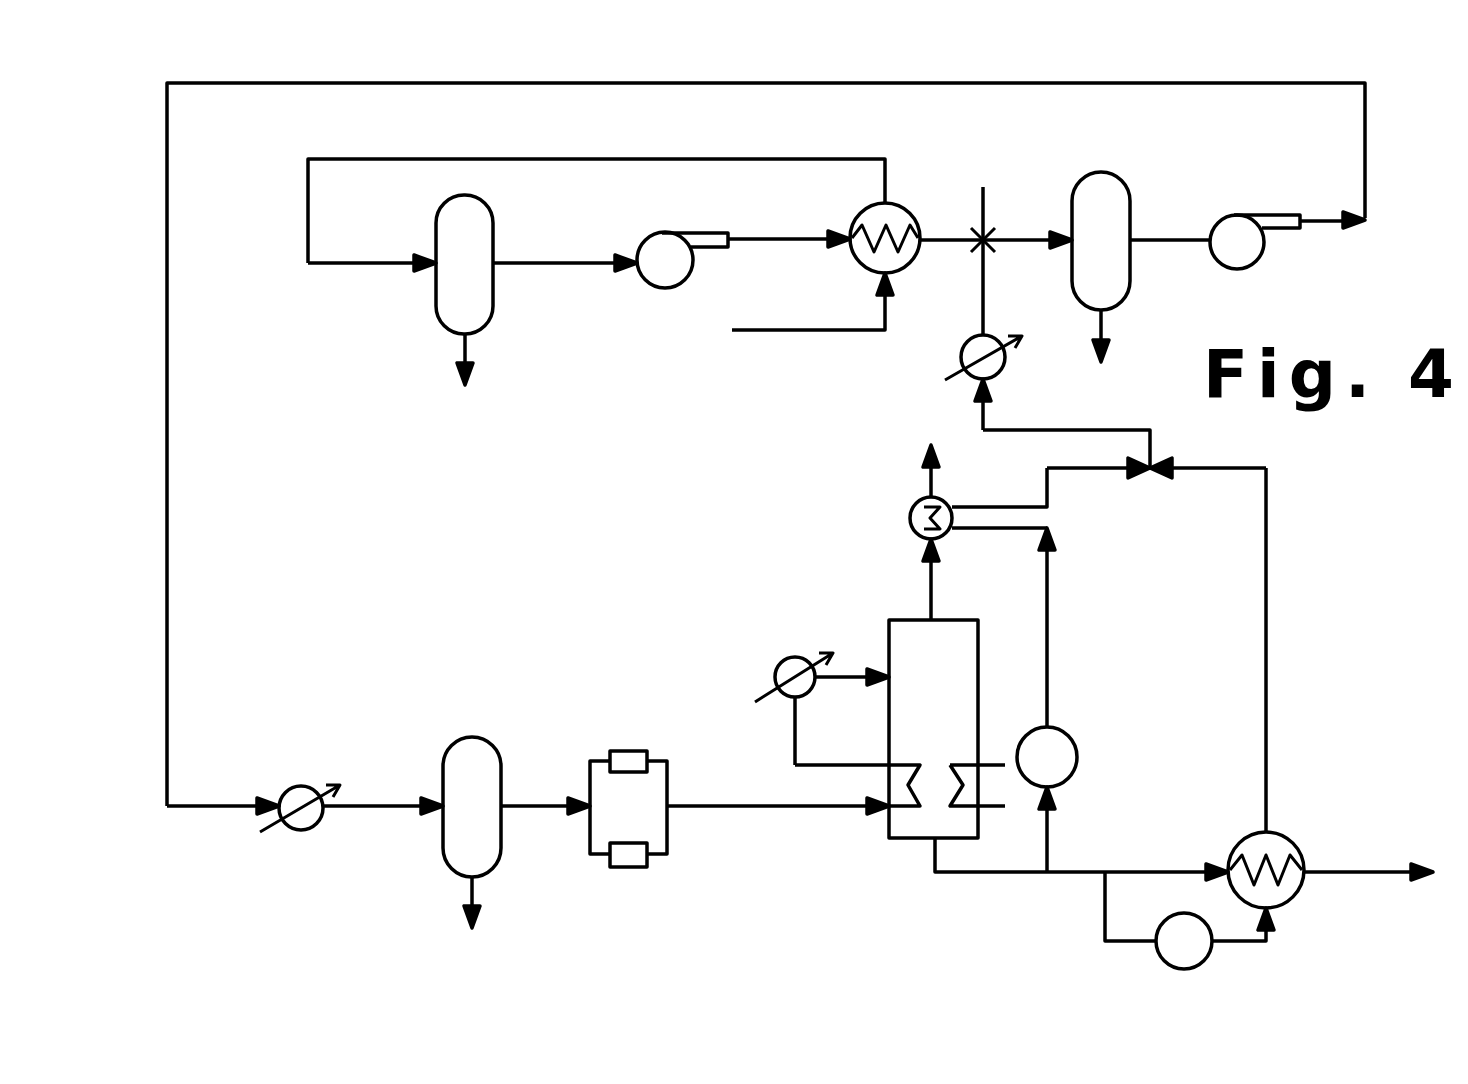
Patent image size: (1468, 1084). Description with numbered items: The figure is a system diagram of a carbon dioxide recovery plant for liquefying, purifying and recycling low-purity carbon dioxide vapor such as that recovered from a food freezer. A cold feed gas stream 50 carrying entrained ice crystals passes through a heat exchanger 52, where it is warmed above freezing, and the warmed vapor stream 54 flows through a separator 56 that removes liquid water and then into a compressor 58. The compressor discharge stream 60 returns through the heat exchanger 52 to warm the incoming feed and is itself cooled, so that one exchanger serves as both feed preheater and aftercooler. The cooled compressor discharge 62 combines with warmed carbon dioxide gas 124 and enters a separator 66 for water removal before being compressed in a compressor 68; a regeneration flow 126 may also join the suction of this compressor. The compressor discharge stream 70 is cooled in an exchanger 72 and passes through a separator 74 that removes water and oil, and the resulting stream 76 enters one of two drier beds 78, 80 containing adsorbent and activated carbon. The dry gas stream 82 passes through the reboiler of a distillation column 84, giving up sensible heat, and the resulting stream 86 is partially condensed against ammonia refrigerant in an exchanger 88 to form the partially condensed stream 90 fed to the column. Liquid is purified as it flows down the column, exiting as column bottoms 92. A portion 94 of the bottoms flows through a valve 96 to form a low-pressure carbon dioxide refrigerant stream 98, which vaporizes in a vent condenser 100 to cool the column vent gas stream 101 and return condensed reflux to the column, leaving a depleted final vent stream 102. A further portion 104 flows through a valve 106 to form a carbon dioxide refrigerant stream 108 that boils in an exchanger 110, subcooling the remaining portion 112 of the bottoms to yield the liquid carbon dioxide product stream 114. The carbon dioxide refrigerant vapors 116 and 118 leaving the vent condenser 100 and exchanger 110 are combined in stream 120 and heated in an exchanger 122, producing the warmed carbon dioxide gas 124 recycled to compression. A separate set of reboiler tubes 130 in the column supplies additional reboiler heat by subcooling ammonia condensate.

The feed gas stream 50 is at (815, 333).
The heat exchanger 52 is at (900, 205).
The warmed vapor stream 54 is at (308, 178).
The separator 56 is at (436, 288).
The compressor 58 is at (692, 232).
The compressor discharge stream 60 is at (788, 238).
The cooled compressor discharge 62 is at (948, 243).
The separator 66 is at (1113, 172).
The compressor 68 is at (1237, 214).
The compressor discharge stream 70 is at (1316, 222).
The exchanger 72 is at (303, 786).
The separator 74 is at (443, 765).
The stream 76 is at (540, 805).
The drier bed 78 is at (622, 751).
The drier bed 80 is at (627, 867).
The dry gas stream 82 is at (748, 808).
The distillation column 84 is at (982, 735).
The stream 86 is at (798, 726).
The exchanger 88 is at (792, 656).
The partially condensed stream 90 is at (848, 670).
The column bottoms 92 is at (986, 875).
The portion of column bottoms 94 is at (1045, 846).
The valve 96 is at (1060, 732).
The CO2 refrigerant stream 98 is at (1050, 632).
The vent condenser 100 is at (910, 512).
The column vent gas stream 101 is at (935, 584).
The final vent stream 102 is at (926, 484).
The further portion of column bottoms 104 is at (1102, 910).
The valve 106 is at (1156, 948).
The carbon dioxide refrigerant stream 108 is at (1268, 937).
The exchanger 110 is at (1280, 832).
The remaining portion of column bottoms 112 is at (1175, 868).
The liquid CO2 product stream 114 is at (1352, 875).
The carbon dioxide refrigerant vapor 116 is at (1012, 505).
The carbon dioxide refrigerant vapor 118 is at (1268, 648).
The combined refrigerant stream 120 is at (988, 424).
The exchanger 122 is at (963, 348).
The warmed CO2 gas 124 is at (986, 275).
The regeneration flow 126 is at (986, 212).
The reboiler tubes 130 is at (987, 805).